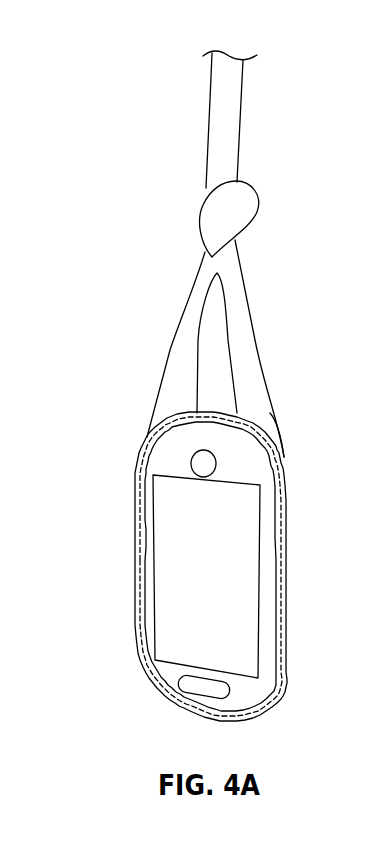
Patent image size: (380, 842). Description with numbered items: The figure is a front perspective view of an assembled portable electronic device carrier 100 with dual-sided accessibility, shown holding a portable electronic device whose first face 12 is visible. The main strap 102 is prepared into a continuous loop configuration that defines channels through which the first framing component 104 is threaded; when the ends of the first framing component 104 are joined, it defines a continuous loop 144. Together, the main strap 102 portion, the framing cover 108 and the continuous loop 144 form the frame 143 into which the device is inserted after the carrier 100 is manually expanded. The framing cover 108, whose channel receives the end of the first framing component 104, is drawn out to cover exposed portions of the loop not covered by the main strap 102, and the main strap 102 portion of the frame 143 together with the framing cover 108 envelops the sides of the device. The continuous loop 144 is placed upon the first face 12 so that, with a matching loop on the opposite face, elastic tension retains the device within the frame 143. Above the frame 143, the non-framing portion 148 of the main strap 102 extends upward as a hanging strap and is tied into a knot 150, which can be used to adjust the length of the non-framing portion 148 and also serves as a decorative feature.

The portable electronic device carrier 100 is at (276, 304).
The first face 12 is at (222, 591).
The main strap 102 is at (283, 456).
The first framing component 104 is at (138, 462).
The continuous loop 144 is at (210, 566).
The framing cover 108 is at (265, 418).
The frame 143 is at (287, 580).
The non-framing portion 148 is at (197, 293).
The knot 150 is at (243, 200).